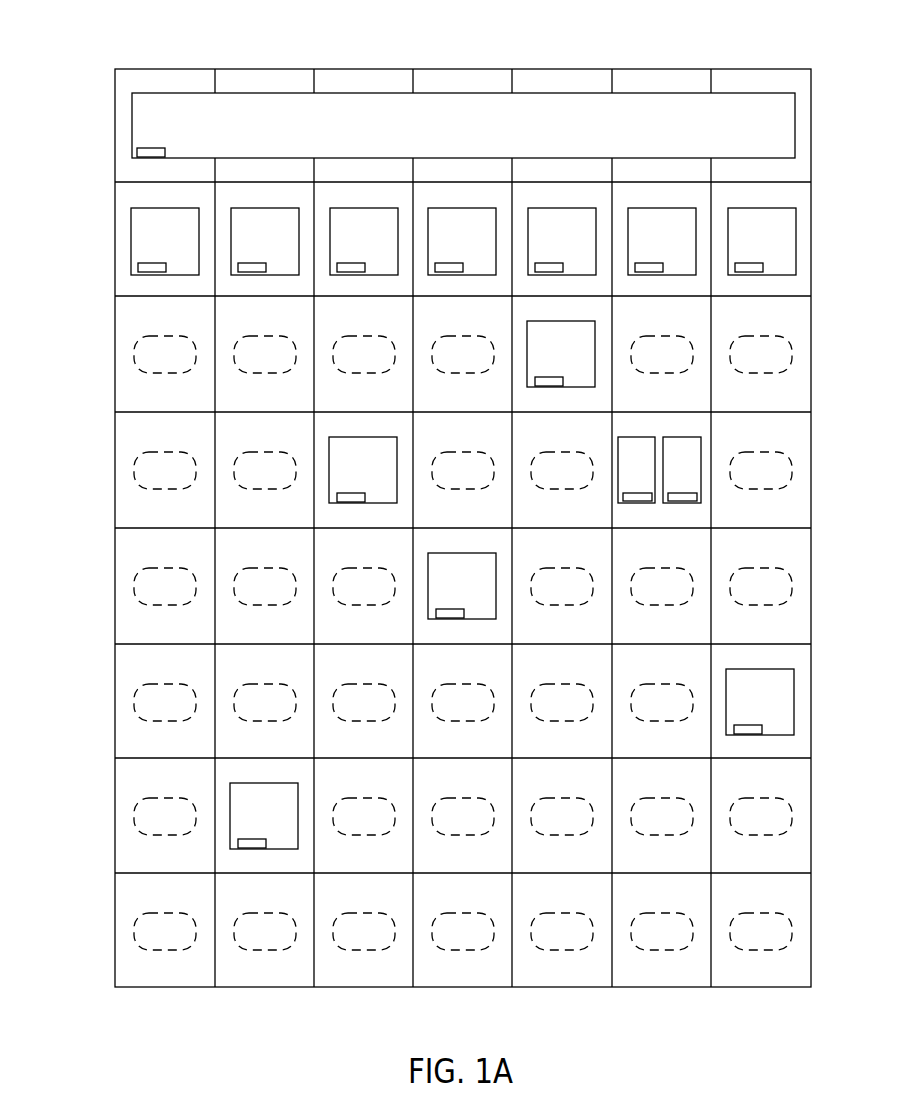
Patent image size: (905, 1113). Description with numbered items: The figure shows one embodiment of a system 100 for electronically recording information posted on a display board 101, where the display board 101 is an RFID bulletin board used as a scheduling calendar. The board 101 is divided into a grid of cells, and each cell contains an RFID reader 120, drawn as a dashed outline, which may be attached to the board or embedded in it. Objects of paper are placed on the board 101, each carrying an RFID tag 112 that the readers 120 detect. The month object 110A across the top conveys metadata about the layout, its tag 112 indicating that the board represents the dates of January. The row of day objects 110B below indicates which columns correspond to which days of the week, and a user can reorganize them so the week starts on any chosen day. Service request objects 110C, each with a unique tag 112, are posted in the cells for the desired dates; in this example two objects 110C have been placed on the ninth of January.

The system 100 is at (175, 28).
The display board 101 is at (115, 71).
The month object 110A is at (132, 112).
The day object 110B is at (131, 222).
The service request object 110C is at (539, 322).
The RFID tag 112 is at (137, 153).
The RFID reader 120 is at (135, 352).